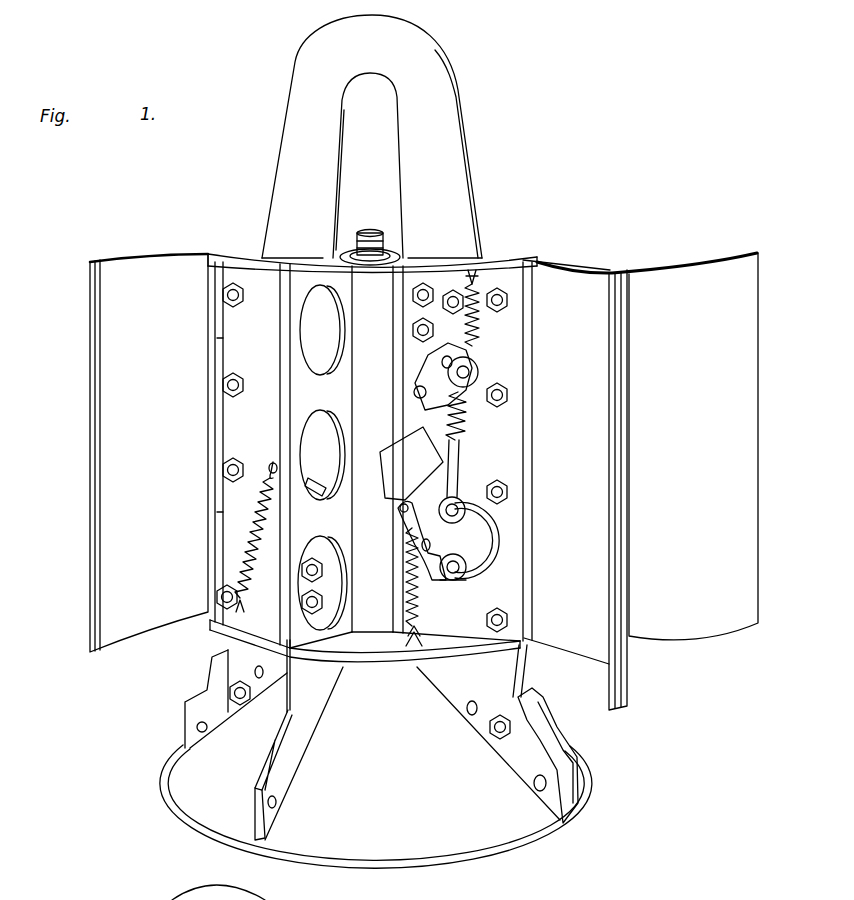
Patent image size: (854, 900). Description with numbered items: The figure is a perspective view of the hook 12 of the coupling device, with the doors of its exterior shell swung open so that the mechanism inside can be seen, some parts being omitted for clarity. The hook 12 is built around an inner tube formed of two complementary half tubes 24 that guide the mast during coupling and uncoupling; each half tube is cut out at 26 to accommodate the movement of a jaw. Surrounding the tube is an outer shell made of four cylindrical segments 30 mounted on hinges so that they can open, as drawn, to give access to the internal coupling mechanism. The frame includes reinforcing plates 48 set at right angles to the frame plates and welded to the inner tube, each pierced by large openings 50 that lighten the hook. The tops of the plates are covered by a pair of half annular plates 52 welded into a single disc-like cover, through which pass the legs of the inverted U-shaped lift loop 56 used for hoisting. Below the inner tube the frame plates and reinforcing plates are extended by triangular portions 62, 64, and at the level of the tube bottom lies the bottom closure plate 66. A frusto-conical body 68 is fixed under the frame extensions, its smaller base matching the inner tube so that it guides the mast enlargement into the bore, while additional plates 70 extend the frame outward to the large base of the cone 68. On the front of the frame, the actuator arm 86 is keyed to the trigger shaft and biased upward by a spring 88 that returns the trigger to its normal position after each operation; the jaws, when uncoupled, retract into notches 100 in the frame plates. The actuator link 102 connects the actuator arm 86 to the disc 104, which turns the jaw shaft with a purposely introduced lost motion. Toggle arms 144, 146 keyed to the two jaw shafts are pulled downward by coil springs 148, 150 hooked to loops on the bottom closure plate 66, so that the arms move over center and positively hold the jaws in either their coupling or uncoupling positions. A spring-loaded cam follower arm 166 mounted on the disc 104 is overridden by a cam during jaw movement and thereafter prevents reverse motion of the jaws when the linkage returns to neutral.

The hook 12 is at (507, 239).
The half tubes 24 is at (392, 335).
The cut out 26 is at (377, 449).
The cylindrical segments 30 is at (168, 456).
The reinforcing plates 48 is at (300, 423).
The large openings 50 is at (332, 372).
The half annular plates 52 is at (515, 258).
The lift loop 56 is at (447, 168).
The triangular portions 62 is at (273, 673).
The triangular portions 64 is at (314, 702).
The bottom closure plate 66 is at (393, 663).
The frusto-conical body 68 is at (463, 840).
The additional plates 70 is at (185, 720).
The actuator arm 86 is at (438, 362).
The spring 88 is at (478, 328).
The notches 100 is at (420, 430).
The actuator link 102 is at (468, 456).
The disc 104 is at (468, 562).
The toggle arm 144 is at (422, 528).
The toggle arm 146 is at (273, 462).
The spring 148 is at (424, 613).
The spring 150 is at (264, 530).
The cam follower arm 166 is at (452, 585).